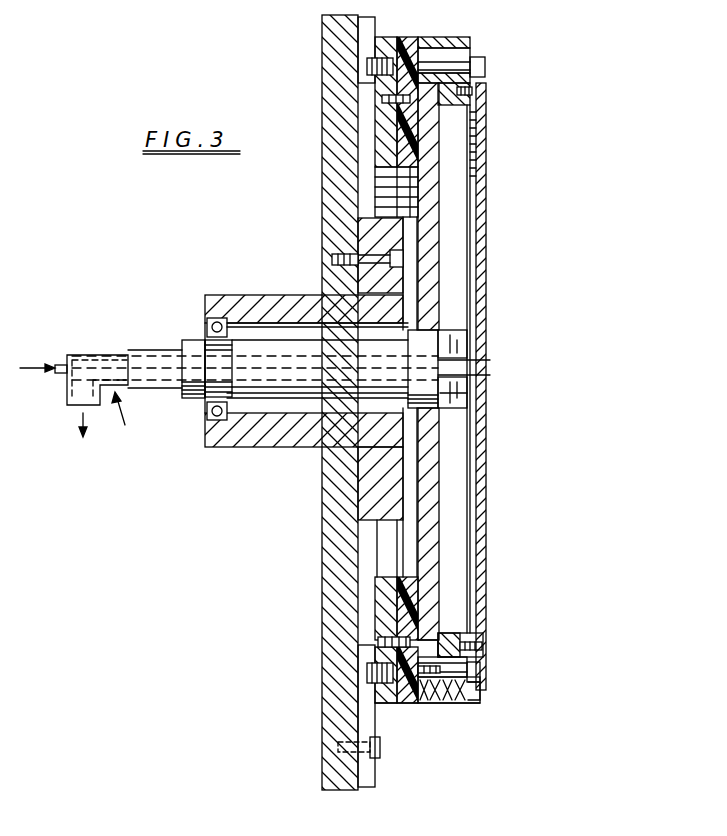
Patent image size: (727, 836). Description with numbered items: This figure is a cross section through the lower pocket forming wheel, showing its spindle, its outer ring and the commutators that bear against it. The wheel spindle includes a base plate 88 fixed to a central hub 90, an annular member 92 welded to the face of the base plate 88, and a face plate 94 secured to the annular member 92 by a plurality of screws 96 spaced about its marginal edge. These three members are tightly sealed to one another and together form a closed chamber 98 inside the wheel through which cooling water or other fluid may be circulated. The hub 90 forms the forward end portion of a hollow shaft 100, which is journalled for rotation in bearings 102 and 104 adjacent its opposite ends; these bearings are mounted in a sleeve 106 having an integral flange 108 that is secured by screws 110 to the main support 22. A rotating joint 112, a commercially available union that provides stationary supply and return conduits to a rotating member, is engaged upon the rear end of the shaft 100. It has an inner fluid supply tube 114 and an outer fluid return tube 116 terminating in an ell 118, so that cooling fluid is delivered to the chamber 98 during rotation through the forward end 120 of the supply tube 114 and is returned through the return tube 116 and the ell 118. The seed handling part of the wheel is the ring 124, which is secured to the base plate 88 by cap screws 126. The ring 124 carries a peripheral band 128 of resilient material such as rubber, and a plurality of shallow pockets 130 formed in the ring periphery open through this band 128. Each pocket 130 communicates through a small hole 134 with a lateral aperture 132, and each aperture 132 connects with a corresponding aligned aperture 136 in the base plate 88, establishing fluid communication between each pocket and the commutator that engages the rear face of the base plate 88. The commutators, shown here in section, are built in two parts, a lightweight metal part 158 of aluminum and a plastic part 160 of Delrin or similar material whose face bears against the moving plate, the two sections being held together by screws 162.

The support 22 is at (333, 730).
The base plate 88 is at (440, 580).
The central hub 90 is at (467, 394).
The annular member 92 is at (455, 642).
The face plate 94 is at (486, 504).
The screws 96 is at (485, 90).
The closed chamber 98 is at (452, 254).
The hollow shaft 100 is at (290, 385).
The bearing 102 is at (390, 410).
The bearing 104 is at (212, 326).
The sleeve 106 is at (274, 297).
The integral flange 108 is at (370, 505).
The screws 110 is at (330, 260).
The rotating joint 112 is at (129, 427).
The inner fluid supply tube 114 is at (62, 366).
The outer fluid return tube 116 is at (105, 358).
The ell 118 is at (67, 402).
The forward end of tube 120 is at (490, 369).
The ring 124 is at (496, 696).
The cap screws 126 is at (485, 70).
The peripheral band 128 is at (457, 708).
The pockets 130 is at (447, 707).
The lateral aperture 132 is at (438, 707).
The small hole 134 is at (473, 697).
The aperture 136 is at (432, 707).
The commutator part 158 is at (383, 705).
The commutator part 160 is at (413, 708).
The screws 162 is at (378, 640).